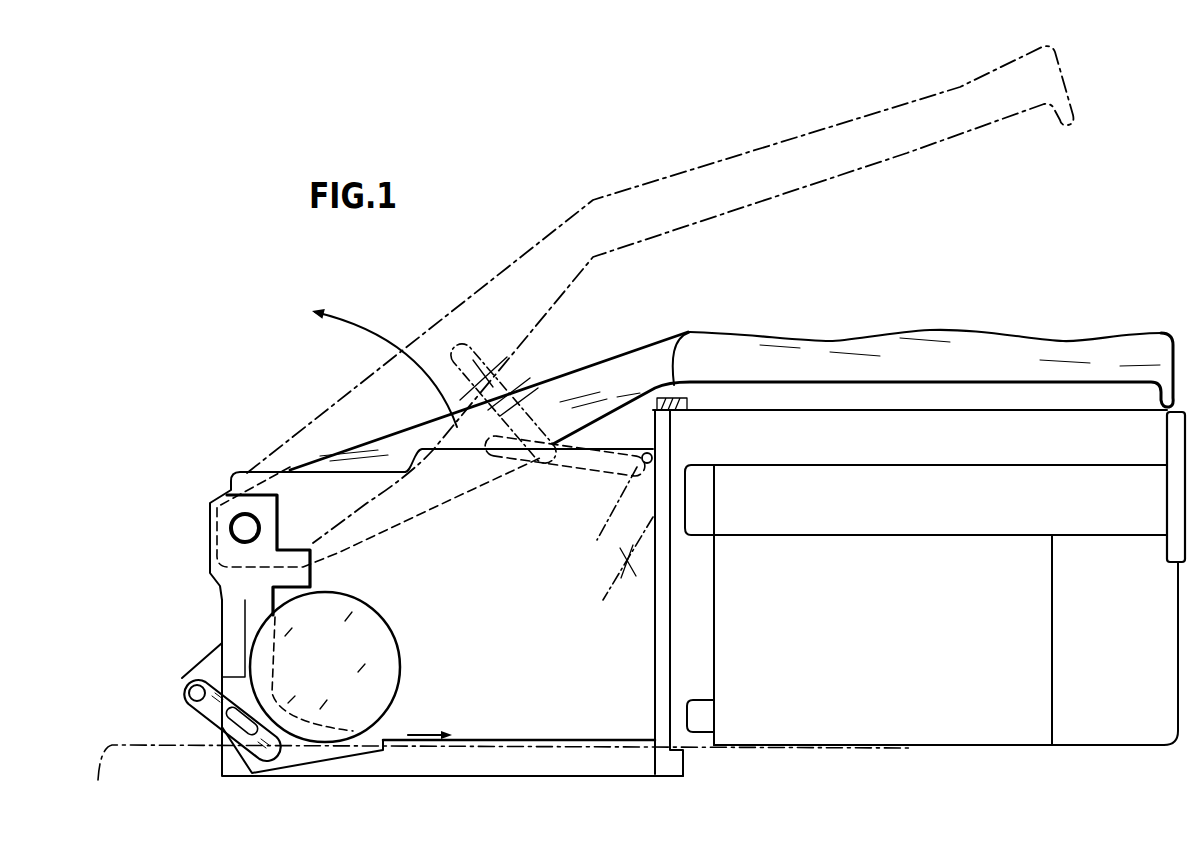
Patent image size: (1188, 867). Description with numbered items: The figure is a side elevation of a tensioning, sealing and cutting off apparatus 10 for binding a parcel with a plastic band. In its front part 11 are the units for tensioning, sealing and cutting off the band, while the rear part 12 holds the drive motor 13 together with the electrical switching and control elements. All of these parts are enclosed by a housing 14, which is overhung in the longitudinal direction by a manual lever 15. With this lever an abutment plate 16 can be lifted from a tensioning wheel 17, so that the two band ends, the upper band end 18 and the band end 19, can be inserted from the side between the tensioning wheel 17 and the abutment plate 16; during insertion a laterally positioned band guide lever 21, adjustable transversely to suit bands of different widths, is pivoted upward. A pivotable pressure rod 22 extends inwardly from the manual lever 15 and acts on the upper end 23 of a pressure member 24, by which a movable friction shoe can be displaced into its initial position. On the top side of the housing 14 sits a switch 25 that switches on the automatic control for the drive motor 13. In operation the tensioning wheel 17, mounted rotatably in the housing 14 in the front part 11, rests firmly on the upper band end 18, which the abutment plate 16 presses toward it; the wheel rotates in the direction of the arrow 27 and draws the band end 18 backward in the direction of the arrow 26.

The tensioning, sealing and cutting off apparatus 10 is at (1079, 257).
The front part 11 is at (456, 788).
The rear part 12 is at (997, 763).
The drive motor 13 is at (1140, 720).
The housing 14 is at (627, 725).
The manual lever 15 is at (790, 177).
The abutment plate 16 is at (313, 762).
The tensioning wheel 17 is at (253, 643).
The upper band end 18 is at (780, 746).
The band end 19 is at (543, 748).
The band guide lever 21 is at (200, 712).
The pressure rod 22 is at (503, 378).
The upper end of pressure member 23 is at (653, 455).
The pressure member 24 is at (620, 556).
The switch 25 is at (683, 332).
The arrow 26 is at (420, 735).
The arrow 27 is at (275, 697).